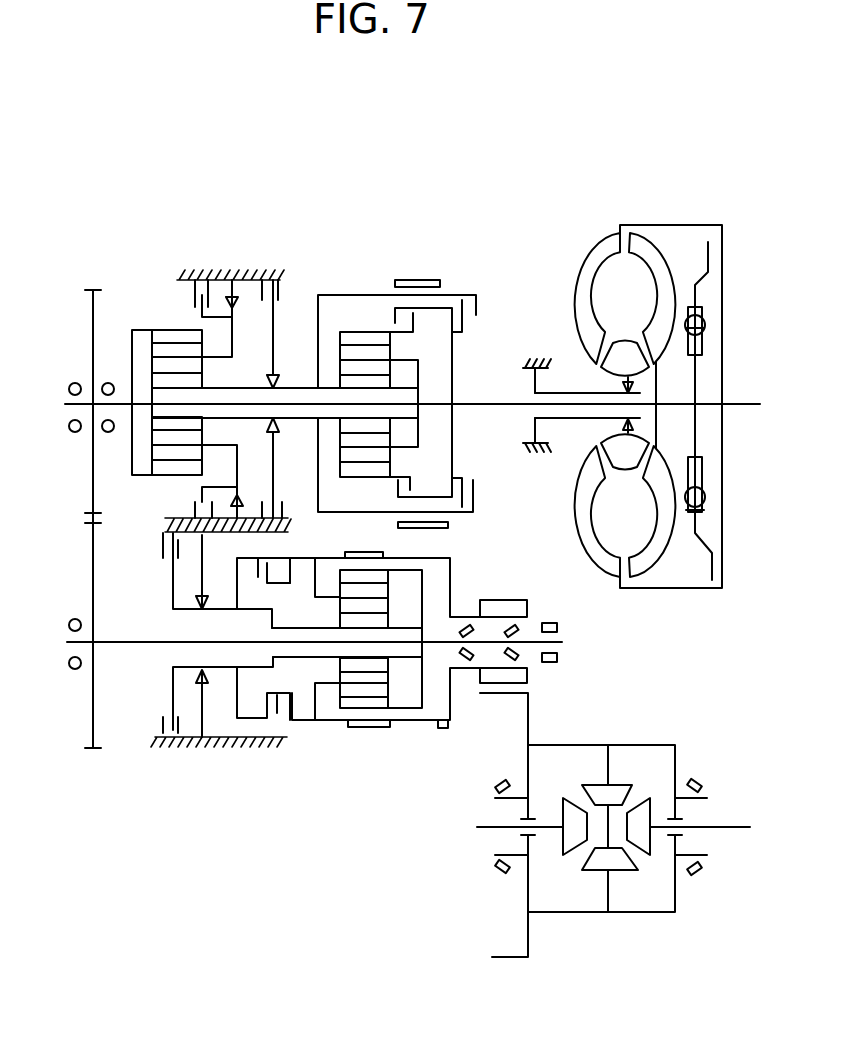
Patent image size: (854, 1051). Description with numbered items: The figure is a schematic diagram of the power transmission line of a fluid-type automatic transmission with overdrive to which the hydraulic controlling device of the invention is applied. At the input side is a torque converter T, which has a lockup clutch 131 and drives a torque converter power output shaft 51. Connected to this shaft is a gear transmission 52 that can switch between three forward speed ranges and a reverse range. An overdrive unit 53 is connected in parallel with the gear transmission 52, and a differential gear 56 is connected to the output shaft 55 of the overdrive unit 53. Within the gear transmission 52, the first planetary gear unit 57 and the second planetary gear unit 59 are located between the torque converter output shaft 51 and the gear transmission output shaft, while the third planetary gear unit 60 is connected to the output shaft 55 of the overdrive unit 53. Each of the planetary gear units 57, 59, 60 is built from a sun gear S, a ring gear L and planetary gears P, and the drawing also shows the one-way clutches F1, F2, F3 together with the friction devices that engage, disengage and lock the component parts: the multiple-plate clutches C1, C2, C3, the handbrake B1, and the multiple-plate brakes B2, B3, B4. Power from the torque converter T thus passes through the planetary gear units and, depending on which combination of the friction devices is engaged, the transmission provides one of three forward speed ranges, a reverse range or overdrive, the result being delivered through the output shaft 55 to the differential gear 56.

The gear transmission 52 is at (247, 165).
The No. 2 planetary gear unit 59 is at (158, 308).
The No. 1 planetary gear unit 57 is at (351, 312).
The torque converter power output shaft 51 is at (493, 408).
The torque converter T is at (668, 182).
The lockup clutch 131 is at (721, 278).
The No. 3 planetary gear unit 60 is at (373, 717).
The overdrive unit 53 is at (221, 785).
The output shaft of the overdrive unit 55 is at (532, 645).
The differential gear 56 is at (688, 718).
The handbrake B1 is at (432, 280).
The multiple-plate brake B2 is at (262, 270).
The multiple-plate brake B3 is at (205, 298).
The multiple-plate brake B4 is at (165, 718).
The multiple-plate clutch C1 is at (415, 318).
The multiple-plate clutch C2 is at (478, 295).
The multiple-plate clutch C3 is at (260, 707).
The one-way clutch F1 is at (276, 378).
The one-way clutch F2 is at (230, 290).
The one-way clutch F3 is at (197, 686).
The ring gear L is at (141, 330).
The planetary gears P is at (158, 353).
The sun gear S is at (155, 382).